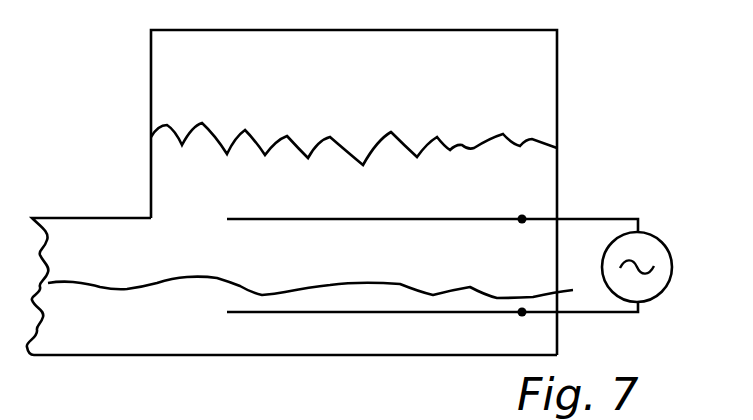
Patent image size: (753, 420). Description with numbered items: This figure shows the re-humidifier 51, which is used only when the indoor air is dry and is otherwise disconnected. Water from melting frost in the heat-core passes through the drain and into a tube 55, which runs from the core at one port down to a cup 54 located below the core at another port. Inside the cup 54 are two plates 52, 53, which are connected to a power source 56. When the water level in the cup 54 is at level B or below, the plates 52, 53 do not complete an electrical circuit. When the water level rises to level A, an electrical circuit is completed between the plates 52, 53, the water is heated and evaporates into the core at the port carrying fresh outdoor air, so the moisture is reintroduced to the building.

The re-humidifier 51 is at (90, 114).
The plate 52 is at (430, 314).
The plate 53 is at (440, 219).
The cup 54 is at (557, 96).
The tube 55 is at (100, 357).
The power source 56 is at (668, 247).
The water level A is at (406, 140).
The water level B is at (262, 290).